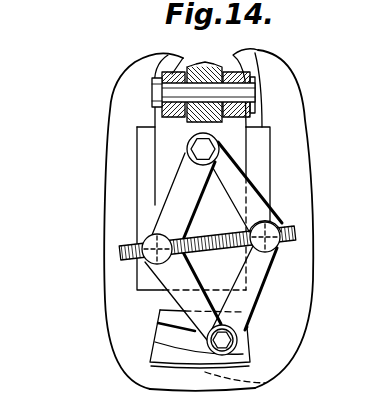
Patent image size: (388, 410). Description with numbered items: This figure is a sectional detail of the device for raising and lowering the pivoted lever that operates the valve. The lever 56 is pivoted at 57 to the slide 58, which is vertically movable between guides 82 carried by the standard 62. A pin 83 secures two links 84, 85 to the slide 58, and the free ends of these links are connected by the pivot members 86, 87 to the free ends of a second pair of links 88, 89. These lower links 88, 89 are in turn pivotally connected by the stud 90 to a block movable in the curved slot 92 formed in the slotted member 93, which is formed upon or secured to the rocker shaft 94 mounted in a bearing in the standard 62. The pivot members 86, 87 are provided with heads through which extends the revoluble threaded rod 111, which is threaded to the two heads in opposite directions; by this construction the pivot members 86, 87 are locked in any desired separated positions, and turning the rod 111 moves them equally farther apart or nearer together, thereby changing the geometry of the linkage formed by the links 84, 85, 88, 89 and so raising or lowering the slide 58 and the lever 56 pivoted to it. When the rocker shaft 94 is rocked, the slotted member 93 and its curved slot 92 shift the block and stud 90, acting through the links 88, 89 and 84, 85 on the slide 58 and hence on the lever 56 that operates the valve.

The lever 56 is at (207, 72).
The pivot 57 is at (260, 95).
The slide 58 is at (260, 72).
The standard 62 is at (128, 82).
The guides 82 is at (262, 153).
The pin 83 is at (200, 148).
The link 84 is at (160, 200).
The link 85 is at (248, 203).
The pivot member 86 is at (143, 262).
The pivot member 87 is at (277, 250).
The link 88 is at (177, 283).
The link 89 is at (249, 297).
The stud 90 is at (249, 337).
The curved slot 92 is at (168, 350).
The slotted member 93 is at (150, 350).
The rocker shaft 94 is at (275, 384).
The threaded rod 111 is at (207, 237).